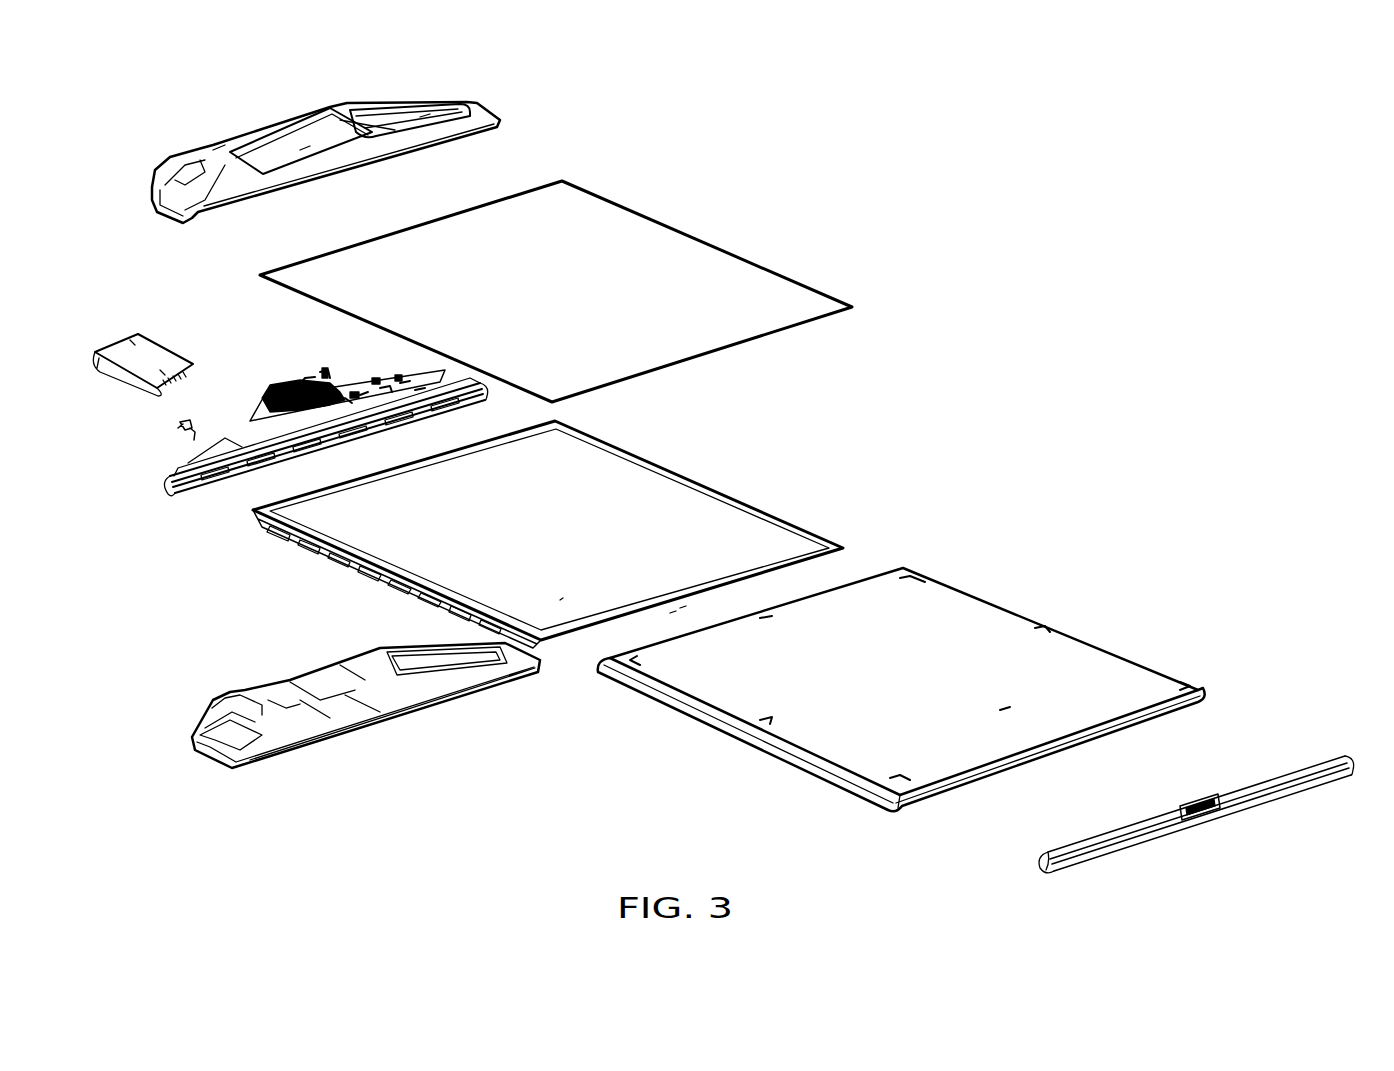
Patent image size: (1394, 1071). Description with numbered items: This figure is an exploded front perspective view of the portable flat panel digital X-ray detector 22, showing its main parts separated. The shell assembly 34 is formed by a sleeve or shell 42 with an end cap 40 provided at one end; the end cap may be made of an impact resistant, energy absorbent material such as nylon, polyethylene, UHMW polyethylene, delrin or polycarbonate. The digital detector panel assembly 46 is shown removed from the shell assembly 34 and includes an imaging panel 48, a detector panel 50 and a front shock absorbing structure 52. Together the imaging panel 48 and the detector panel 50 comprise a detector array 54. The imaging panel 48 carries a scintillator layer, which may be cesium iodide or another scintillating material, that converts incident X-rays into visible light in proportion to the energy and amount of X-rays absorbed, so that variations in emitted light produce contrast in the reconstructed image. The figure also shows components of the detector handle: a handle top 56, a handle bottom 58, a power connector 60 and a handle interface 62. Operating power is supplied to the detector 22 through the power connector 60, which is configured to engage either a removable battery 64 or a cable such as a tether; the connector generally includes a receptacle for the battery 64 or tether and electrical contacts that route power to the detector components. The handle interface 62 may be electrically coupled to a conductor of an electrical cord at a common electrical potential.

The portable digital X-ray detector 22 is at (1018, 262).
The shell assembly 34 is at (872, 822).
The end cap 40 is at (1092, 855).
The sleeve or shell 42 is at (795, 752).
The digital detector panel assembly 46 is at (301, 598).
The imaging panel 48 is at (568, 598).
The detector panel 50 is at (553, 640).
The front shock absorbing structure 52 is at (710, 245).
The detector array 54 is at (598, 710).
The handle top 56 is at (480, 103).
The handle bottom 58 is at (217, 757).
The power connector 60 is at (252, 438).
The handle interface 62 is at (450, 385).
The removable battery 64 is at (155, 372).